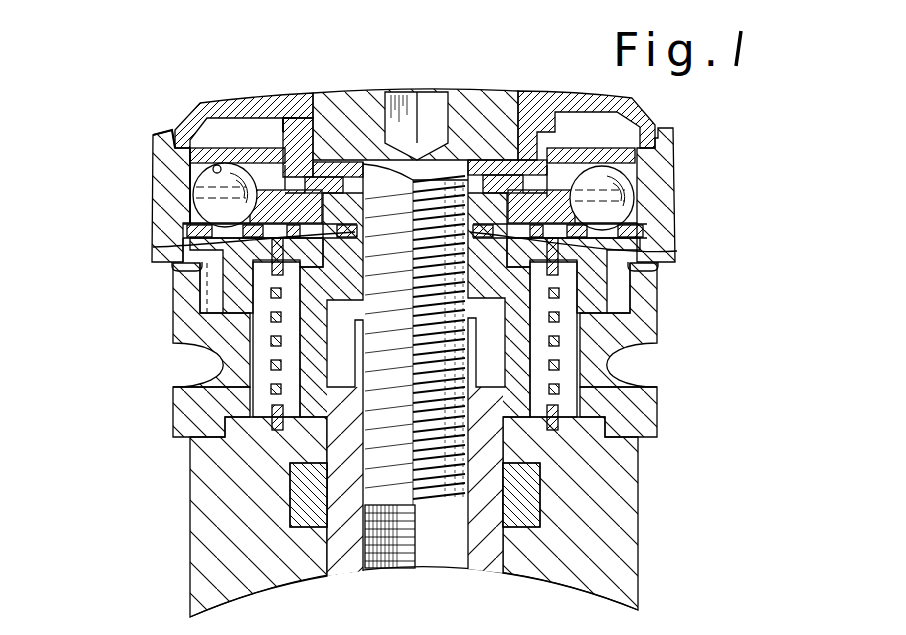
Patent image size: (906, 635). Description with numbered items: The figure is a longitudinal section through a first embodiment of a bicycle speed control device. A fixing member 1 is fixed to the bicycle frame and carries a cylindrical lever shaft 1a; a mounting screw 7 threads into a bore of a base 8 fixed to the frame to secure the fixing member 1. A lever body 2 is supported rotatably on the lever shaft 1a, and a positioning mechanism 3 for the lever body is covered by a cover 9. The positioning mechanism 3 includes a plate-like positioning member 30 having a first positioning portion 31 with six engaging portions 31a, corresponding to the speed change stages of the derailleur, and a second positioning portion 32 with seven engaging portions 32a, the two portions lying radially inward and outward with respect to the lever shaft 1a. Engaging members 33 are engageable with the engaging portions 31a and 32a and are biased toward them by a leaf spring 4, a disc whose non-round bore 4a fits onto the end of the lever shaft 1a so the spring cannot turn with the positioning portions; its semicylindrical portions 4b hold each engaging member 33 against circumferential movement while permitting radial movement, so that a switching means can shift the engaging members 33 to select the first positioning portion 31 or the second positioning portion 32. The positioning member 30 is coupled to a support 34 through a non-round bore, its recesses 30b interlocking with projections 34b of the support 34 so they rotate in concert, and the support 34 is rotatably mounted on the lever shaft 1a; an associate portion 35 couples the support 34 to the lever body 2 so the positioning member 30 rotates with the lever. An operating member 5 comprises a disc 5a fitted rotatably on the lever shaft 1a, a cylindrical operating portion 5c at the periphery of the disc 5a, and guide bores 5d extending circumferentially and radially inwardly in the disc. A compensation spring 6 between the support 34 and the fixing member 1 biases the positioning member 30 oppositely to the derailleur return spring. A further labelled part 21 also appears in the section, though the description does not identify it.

The fixing member 1 is at (196, 534).
The cylindrical lever shaft 1a is at (310, 373).
The lever body 2 is at (174, 330).
The positioning mechanism 3 is at (246, 147).
The leaf spring 4 is at (222, 147).
The non-round bore 4a is at (513, 190).
The semicylindrical portions 4b is at (213, 165).
The operating member 5 is at (163, 143).
The disc 5a is at (317, 195).
The cylindrical operating portion 5c is at (188, 174).
The guide bores 5d is at (190, 192).
The compensation spring 6 is at (271, 365).
The mounting screw 7 is at (347, 162).
The base 8 is at (333, 560).
The cover 9 is at (182, 122).
The holder flange 21 is at (186, 402).
The positioning member 30 is at (660, 232).
The recesses 30b is at (170, 266).
The first positioning portion 31 is at (300, 118).
The engaging portions 31a is at (282, 128).
The second positioning portion 32 is at (153, 228).
The engaging portions 32a is at (290, 222).
The engaging members 33 is at (212, 214).
The support 34 is at (223, 267).
The projections 34b is at (343, 190).
The associate portion 35 is at (207, 297).